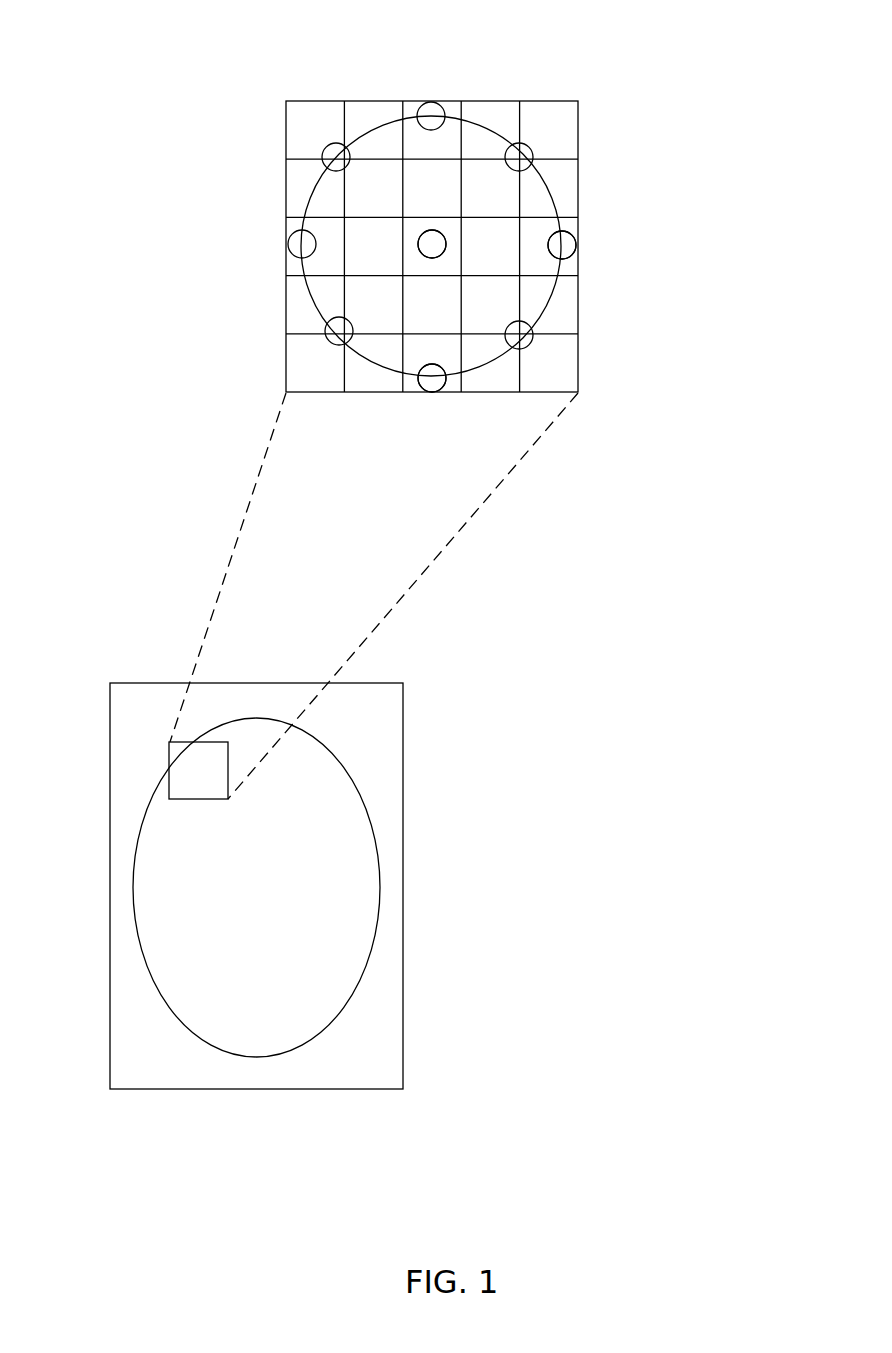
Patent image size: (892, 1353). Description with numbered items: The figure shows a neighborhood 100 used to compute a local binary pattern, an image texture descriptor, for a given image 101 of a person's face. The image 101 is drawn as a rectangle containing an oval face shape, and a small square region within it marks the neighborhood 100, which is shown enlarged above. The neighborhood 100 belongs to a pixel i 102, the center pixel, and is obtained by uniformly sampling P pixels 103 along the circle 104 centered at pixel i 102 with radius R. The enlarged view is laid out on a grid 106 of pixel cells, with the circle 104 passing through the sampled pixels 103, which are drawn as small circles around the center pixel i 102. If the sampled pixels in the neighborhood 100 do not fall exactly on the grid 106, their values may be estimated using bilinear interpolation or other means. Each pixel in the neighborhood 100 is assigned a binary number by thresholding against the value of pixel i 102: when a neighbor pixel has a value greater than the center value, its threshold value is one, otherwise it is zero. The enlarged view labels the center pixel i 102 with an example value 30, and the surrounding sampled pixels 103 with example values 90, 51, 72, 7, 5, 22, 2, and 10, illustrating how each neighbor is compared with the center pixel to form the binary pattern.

The neighborhood 100 is at (207, 254).
The image 101 is at (404, 880).
The pixel i 102 is at (419, 232).
The pixels 103 is at (562, 246).
The circle 104 is at (485, 110).
The grid 106 is at (570, 357).
The pixel value 2 is at (289, 244).
The pixel value 5 is at (432, 392).
The pixel value 7 is at (525, 345).
The pixel value 10 is at (327, 149).
The pixel value 22 is at (328, 342).
The pixel value 30 is at (452, 244).
The pixel value 51 is at (528, 149).
The pixel value 72 is at (577, 245).
The pixel value 90 is at (431, 101).